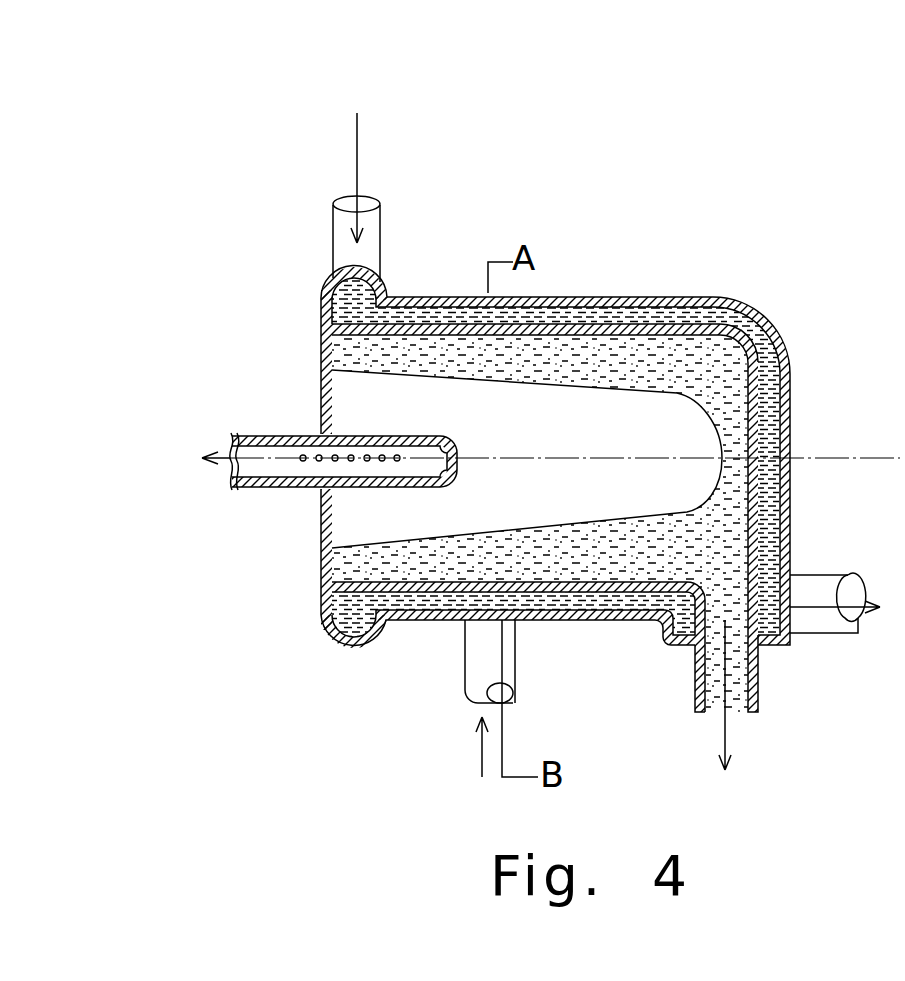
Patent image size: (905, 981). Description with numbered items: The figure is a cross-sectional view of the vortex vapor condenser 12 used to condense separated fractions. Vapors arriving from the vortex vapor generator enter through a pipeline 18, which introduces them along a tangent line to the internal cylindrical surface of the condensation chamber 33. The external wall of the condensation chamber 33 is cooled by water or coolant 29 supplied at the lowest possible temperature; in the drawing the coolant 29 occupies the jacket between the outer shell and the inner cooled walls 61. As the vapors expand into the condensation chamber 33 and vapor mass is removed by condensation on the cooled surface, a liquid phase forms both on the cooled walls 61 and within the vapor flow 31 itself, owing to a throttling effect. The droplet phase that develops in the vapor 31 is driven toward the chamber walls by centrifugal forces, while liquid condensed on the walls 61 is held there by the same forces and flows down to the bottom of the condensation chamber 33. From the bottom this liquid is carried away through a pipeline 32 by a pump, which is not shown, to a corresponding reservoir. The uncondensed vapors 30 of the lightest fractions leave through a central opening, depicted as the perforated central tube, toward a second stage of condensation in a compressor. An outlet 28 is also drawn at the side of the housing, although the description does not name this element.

The vortex vapor condenser 12 is at (402, 297).
The pipeline 18 is at (493, 670).
The outlet tube 28 is at (847, 603).
The water or coolant 29 is at (363, 207).
The uncondensed vapors 30 is at (257, 453).
The vapor flow 31 is at (370, 528).
The pipeline 32 is at (758, 673).
The condensation chamber 33 is at (443, 618).
The cooled walls 61 is at (322, 330).